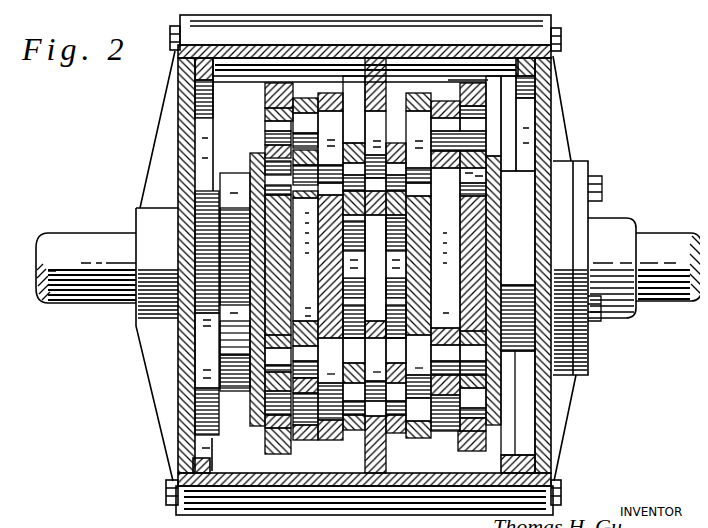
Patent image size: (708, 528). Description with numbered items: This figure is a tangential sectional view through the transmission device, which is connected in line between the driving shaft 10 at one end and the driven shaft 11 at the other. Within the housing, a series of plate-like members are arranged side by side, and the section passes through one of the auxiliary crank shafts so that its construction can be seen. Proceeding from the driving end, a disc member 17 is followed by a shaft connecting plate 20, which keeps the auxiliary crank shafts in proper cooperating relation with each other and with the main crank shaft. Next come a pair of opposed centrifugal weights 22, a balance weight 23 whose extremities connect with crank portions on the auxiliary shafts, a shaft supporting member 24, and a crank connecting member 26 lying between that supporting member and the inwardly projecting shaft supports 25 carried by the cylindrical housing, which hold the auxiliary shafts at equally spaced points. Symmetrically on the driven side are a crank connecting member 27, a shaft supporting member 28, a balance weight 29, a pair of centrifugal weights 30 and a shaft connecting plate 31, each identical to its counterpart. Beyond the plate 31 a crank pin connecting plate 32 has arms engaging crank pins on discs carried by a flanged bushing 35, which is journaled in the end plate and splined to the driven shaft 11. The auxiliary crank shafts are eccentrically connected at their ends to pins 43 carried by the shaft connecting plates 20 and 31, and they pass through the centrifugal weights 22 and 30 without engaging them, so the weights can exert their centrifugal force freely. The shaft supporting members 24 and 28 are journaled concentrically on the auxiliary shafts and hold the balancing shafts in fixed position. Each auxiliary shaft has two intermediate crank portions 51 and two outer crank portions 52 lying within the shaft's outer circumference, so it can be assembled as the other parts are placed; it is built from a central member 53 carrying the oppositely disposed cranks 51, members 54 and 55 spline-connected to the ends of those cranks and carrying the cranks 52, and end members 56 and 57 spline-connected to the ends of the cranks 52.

The driving shaft 10 is at (650, 230).
The driven shaft 11 is at (72, 236).
The disc member 17 is at (518, 265).
The shaft connecting plate 20 is at (490, 148).
The centrifugal weights 22 is at (467, 82).
The balance weight 23 is at (435, 447).
The shaft supporting member 24 is at (407, 218).
The inwardly projecting shaft supports 25 is at (370, 76).
The crank connecting member 26 is at (388, 427).
The crank connecting member 27 is at (347, 428).
The shaft supporting member 28 is at (320, 262).
The balance weight 29 is at (300, 430).
The centrifugal weights 30 is at (262, 88).
The shaft connecting plate 31 is at (247, 148).
The crank pin connecting plate 32 is at (238, 165).
The flanged bushing 35 is at (195, 338).
The pins 43 is at (462, 167).
The intermediate crank portions 51 is at (375, 253).
The outer crank portions 52 is at (389, 264).
The central member 53 is at (377, 263).
The member carrying outer crank 54 is at (330, 256).
The member carrying outer crank 55 is at (418, 265).
The end member 56 is at (262, 106).
The end member 57 is at (470, 104).